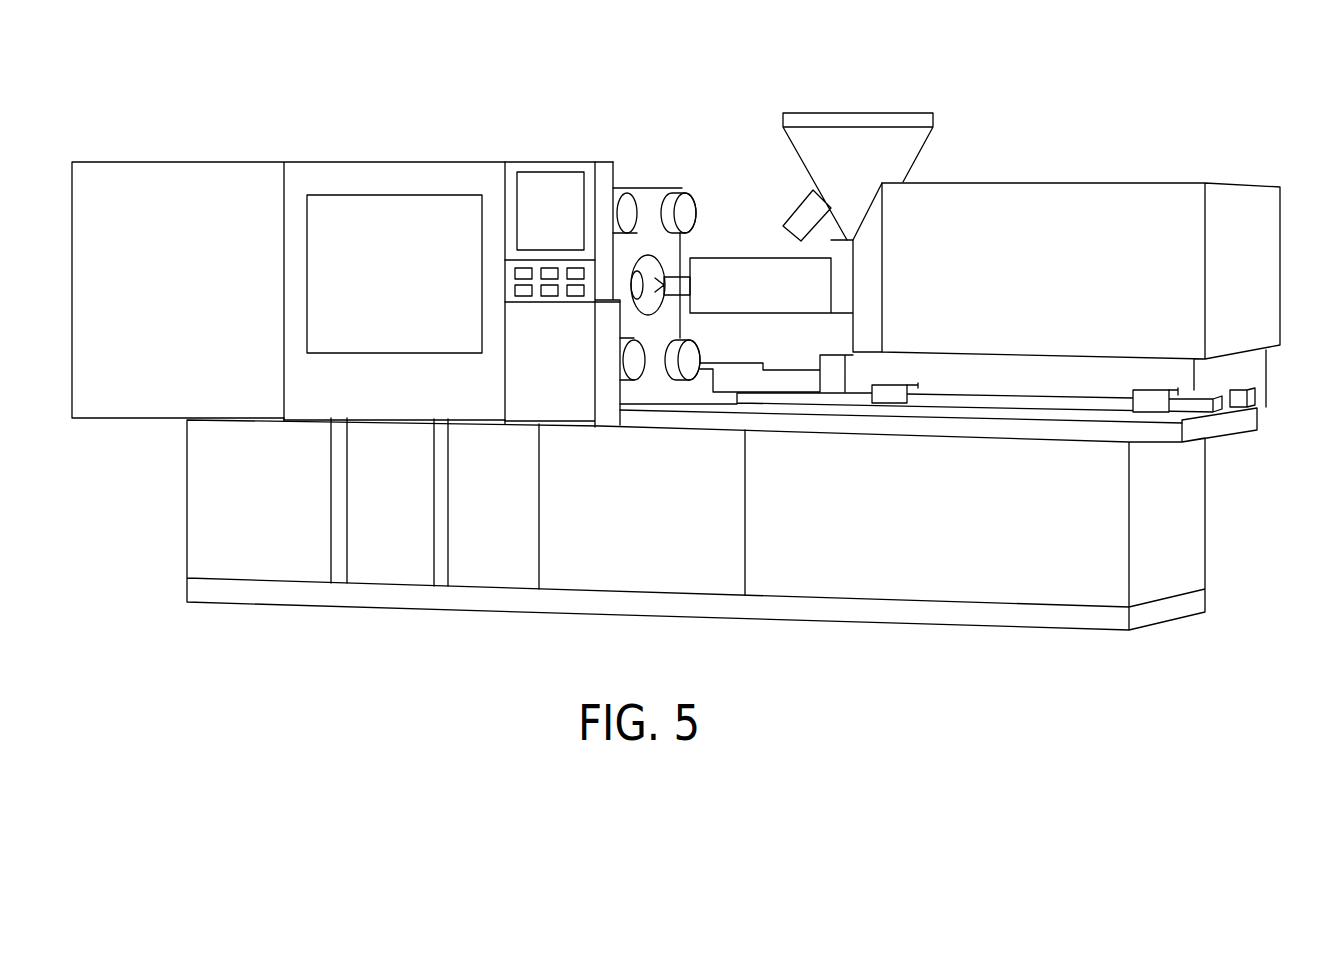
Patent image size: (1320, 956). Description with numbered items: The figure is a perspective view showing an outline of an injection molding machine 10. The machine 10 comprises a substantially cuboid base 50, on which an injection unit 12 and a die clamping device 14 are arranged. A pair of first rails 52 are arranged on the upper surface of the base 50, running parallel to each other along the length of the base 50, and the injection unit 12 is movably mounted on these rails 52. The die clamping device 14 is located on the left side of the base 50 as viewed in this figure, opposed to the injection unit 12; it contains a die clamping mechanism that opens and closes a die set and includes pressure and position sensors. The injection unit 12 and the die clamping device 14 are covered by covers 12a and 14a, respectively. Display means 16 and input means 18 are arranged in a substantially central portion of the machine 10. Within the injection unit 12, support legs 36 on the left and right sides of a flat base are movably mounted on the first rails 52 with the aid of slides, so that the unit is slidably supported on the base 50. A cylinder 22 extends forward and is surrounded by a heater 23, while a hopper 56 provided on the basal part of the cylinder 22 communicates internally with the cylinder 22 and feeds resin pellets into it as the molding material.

The injection molding machine 10 is at (676, 317).
The injection unit 12 is at (955, 215).
The cover 12a is at (1160, 182).
The die clamping device 14 is at (346, 231).
The cover 14a is at (303, 160).
The display means 16 is at (535, 186).
The input means 18 is at (577, 268).
The cylinder 22 is at (776, 284).
The heater 23 is at (738, 266).
The support legs 36 is at (888, 403).
The base 50 is at (722, 506).
The first rails 52 is at (990, 405).
The hopper 56 is at (897, 140).